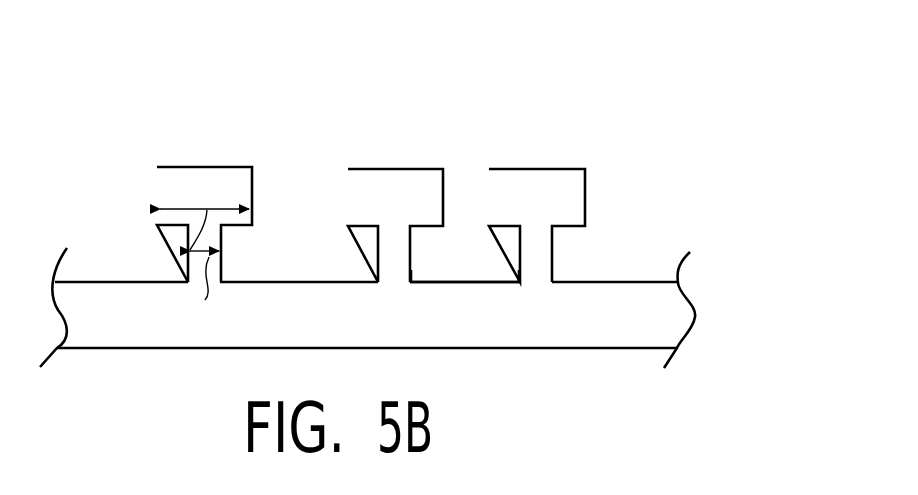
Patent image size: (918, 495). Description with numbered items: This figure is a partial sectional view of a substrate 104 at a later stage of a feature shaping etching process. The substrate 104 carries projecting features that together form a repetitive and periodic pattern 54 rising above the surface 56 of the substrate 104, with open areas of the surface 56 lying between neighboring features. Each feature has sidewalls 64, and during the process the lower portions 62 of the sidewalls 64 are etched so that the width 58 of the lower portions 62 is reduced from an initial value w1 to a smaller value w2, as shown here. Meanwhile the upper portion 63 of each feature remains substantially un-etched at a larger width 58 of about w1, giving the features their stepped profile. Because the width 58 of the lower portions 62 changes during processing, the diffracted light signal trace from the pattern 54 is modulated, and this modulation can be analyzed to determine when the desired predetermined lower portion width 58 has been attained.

The substrate 104 is at (179, 64).
The pattern 54 is at (505, 89).
The surface 56 is at (305, 277).
The width 58 is at (188, 240).
The lower portions 62 is at (412, 253).
The upper portion 63 is at (442, 200).
The sidewalls 64 is at (585, 202).